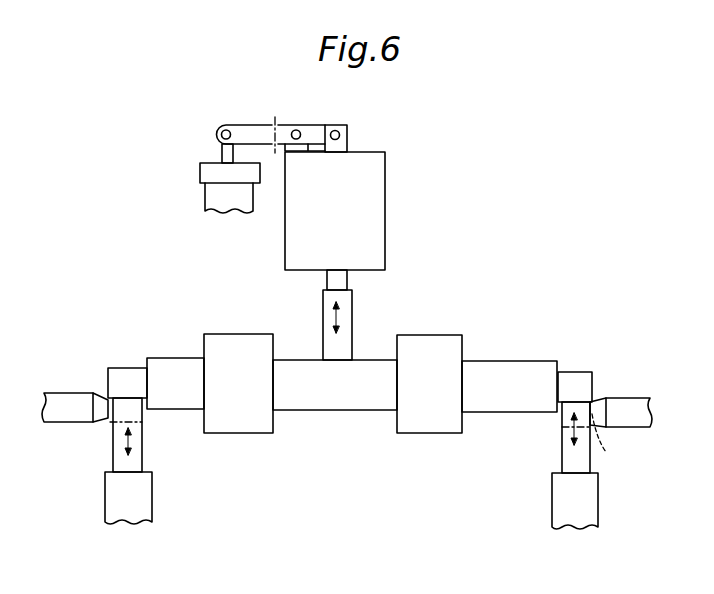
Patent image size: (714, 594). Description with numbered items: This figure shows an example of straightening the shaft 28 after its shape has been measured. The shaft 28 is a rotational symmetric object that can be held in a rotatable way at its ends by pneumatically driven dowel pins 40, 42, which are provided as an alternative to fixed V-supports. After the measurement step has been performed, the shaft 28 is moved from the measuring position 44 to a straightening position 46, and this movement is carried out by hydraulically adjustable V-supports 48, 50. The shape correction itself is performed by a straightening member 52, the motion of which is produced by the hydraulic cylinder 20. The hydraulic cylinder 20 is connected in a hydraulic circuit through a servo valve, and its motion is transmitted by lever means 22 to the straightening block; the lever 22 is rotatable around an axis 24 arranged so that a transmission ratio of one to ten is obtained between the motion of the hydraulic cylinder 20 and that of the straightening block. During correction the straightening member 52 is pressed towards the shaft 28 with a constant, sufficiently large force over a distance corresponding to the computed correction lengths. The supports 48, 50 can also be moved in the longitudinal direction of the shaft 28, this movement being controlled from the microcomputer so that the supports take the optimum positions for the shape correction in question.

The hydraulic cylinder 20 is at (203, 173).
The lever means 22 is at (245, 133).
The axis 24 is at (298, 131).
The shaft 28 is at (351, 393).
The dowel pin 40 is at (80, 412).
The dowel pin 42 is at (628, 417).
The measuring position 44 is at (606, 452).
The straightening position 46 is at (582, 380).
The hydraulically adjustable V-support 48 is at (135, 453).
The hydraulically adjustable V-support 50 is at (570, 463).
The straightening member 52 is at (342, 308).